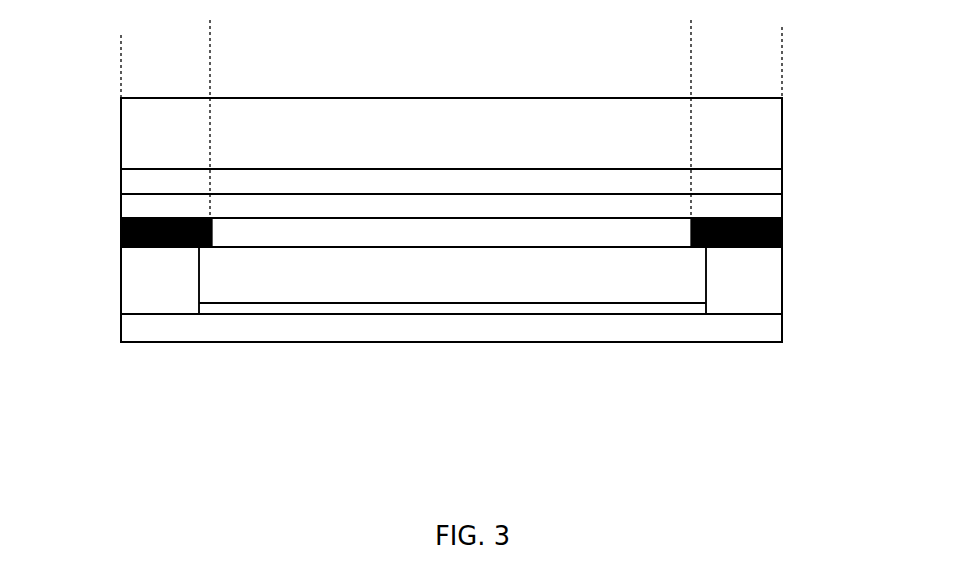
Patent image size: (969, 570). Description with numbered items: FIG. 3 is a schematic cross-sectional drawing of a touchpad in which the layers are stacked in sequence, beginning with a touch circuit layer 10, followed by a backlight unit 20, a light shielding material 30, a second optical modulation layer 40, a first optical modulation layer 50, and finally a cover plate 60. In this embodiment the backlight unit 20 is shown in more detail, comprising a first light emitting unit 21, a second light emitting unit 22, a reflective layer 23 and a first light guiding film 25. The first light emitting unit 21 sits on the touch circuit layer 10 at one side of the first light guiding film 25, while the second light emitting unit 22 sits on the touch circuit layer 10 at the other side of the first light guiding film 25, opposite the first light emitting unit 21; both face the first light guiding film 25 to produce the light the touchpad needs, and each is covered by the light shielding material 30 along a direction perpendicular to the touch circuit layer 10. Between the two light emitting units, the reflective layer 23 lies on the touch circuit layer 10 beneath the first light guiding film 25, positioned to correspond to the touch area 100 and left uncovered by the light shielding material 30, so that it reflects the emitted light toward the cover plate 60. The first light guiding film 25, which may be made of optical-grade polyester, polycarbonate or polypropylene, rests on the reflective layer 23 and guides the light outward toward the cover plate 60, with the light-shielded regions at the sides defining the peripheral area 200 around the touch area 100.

The touch circuit layer 10 is at (228, 340).
The backlight unit 20 is at (782, 305).
The first light emitting unit 21 is at (135, 288).
The second light emitting unit 22 is at (760, 290).
The reflective layer 23 is at (585, 316).
The first light guiding film 25 is at (466, 289).
The light shielding material 30 is at (782, 230).
The second optical modulation layer 40 is at (121, 213).
The first optical modulation layer 50 is at (782, 180).
The cover plate 60 is at (121, 135).
The touch area 100 is at (690, 27).
The peripheral area 200 is at (209, 53).